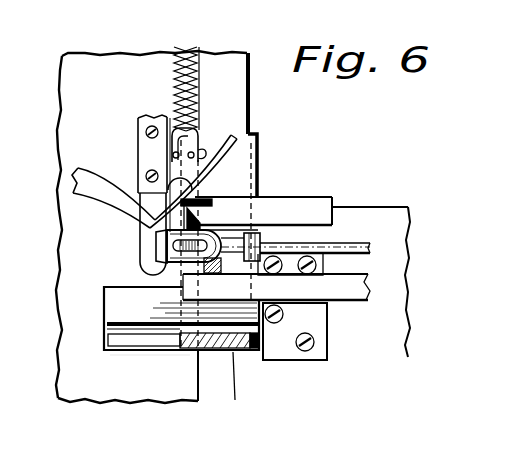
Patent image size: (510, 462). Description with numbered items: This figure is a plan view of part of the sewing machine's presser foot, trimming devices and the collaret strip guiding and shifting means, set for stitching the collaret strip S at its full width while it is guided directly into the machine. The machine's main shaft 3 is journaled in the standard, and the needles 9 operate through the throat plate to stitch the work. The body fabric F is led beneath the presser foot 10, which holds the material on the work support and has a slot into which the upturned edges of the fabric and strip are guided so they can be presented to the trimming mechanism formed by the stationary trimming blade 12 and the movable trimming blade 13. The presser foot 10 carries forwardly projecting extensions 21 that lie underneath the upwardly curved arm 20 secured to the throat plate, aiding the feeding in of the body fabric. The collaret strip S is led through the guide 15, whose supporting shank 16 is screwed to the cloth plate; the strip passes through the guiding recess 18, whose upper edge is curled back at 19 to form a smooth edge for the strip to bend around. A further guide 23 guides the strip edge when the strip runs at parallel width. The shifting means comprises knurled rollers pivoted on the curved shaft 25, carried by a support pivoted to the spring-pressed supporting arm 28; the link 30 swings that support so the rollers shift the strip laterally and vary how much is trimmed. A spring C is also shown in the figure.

The spring C is at (186, 48).
The main shaft 3 is at (228, 91).
The presser foot 10 is at (210, 138).
The movable trimming blade 13 is at (100, 168).
The needles 9 is at (192, 159).
The stationary trimming blade 12 is at (256, 245).
The guide 23 is at (297, 237).
The link 30 is at (347, 240).
The upwardly curved arm 20 is at (156, 244).
The shaft 25 is at (160, 248).
The extensions 21 is at (148, 268).
The guide 15 is at (112, 310).
The curled back edge 19 is at (112, 326).
The guiding recess 18 is at (150, 368).
The supporting arm 28 is at (276, 278).
The supporting shank 16 is at (312, 327).
The body fabric F is at (80, 378).
The collaret strip S is at (232, 390).